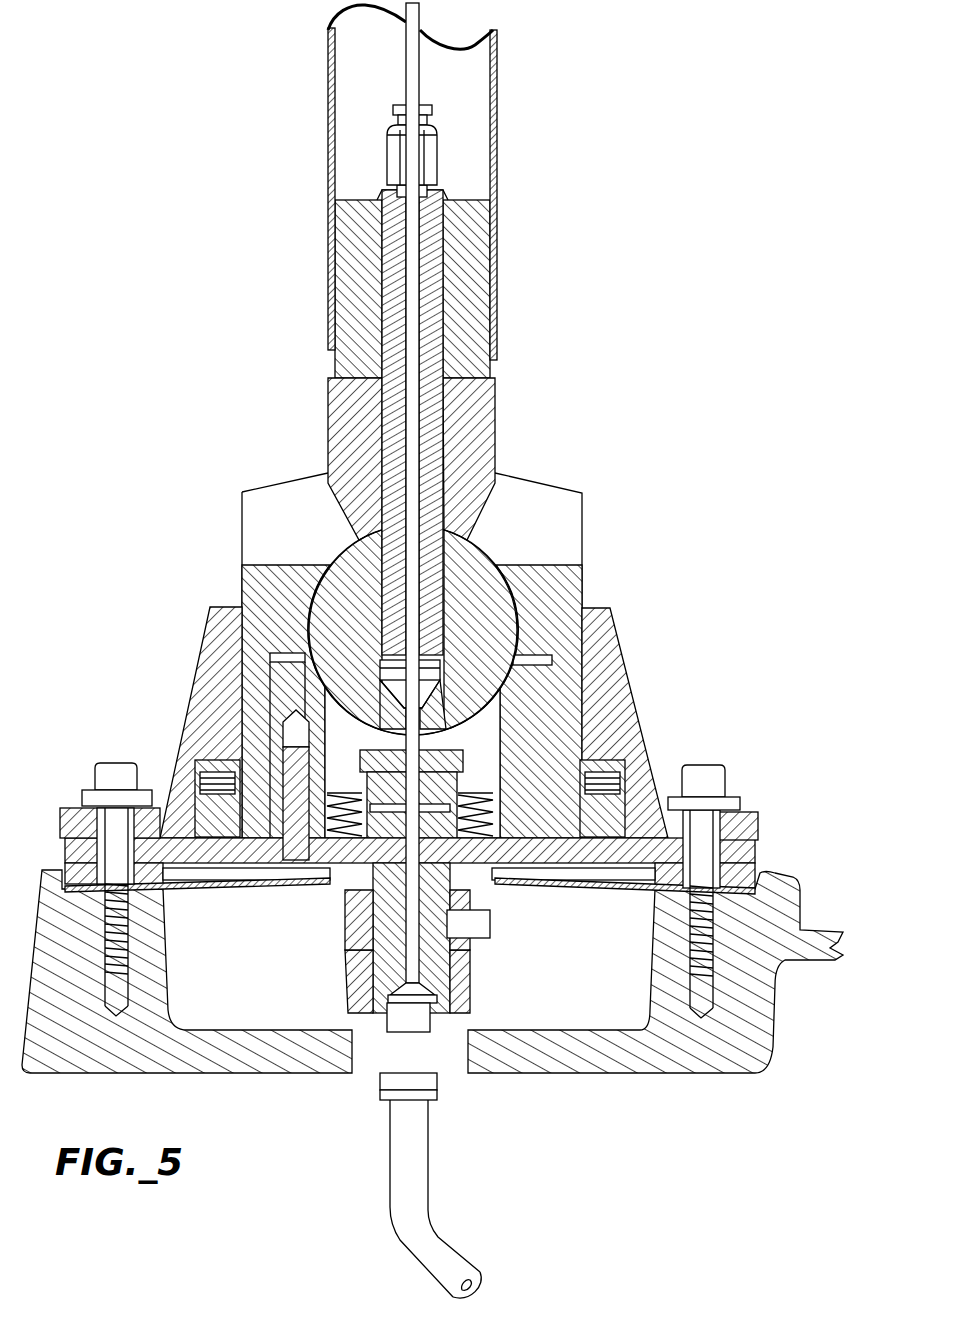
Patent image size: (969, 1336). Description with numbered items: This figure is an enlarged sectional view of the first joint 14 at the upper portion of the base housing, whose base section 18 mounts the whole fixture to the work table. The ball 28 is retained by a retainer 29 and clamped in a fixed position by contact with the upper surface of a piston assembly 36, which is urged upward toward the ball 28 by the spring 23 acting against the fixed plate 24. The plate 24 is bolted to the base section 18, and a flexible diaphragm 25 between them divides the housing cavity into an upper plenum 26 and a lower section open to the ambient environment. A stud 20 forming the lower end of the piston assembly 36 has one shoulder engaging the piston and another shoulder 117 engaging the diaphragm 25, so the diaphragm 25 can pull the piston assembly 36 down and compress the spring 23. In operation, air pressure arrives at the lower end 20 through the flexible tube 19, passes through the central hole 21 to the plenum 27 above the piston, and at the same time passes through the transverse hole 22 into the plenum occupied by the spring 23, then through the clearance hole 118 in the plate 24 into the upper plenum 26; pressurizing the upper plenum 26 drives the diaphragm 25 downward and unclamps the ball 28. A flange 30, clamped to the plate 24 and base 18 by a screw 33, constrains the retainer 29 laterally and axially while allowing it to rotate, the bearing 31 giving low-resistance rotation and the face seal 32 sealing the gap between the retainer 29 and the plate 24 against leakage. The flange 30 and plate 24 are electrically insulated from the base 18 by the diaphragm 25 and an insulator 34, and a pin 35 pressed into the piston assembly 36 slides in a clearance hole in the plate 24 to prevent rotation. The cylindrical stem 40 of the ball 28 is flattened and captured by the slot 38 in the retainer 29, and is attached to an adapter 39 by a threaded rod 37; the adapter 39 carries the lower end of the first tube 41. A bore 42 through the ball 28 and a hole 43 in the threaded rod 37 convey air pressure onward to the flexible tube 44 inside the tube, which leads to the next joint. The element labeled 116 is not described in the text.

The first joint 14 is at (632, 389).
The base section 18 is at (712, 1075).
The flexible tube 19 is at (455, 1252).
The stud (lower end of piston assembly) 20 is at (455, 748).
The hole 21 is at (468, 990).
The transverse hole 22 is at (350, 935).
The spring 23 is at (315, 888).
The plate 24 is at (65, 855).
The diaphragm 25 is at (636, 892).
The upper plenum 26 is at (218, 890).
The plenum 27 is at (275, 705).
The ball 28 is at (345, 555).
The retainer 29 is at (242, 580).
The flange 30 is at (218, 607).
The bearing 31 is at (218, 762).
The face seal 32 is at (600, 778).
The screw 33 is at (110, 762).
The insulator 34 is at (88, 800).
The pin 35 is at (292, 878).
The piston assembly 36 is at (600, 660).
The threaded rod 37 is at (440, 190).
The slot 38 is at (555, 500).
The adapter 39 is at (495, 372).
The cylindrical stem 40 is at (335, 400).
The first tube 41 is at (501, 79).
The bore 42 is at (345, 575).
The hole 43 is at (405, 210).
The flexible tube 44 is at (405, 53).
The retainer block 116 is at (470, 770).
The shoulder 117 is at (492, 906).
The clearance hole 118 is at (385, 985).